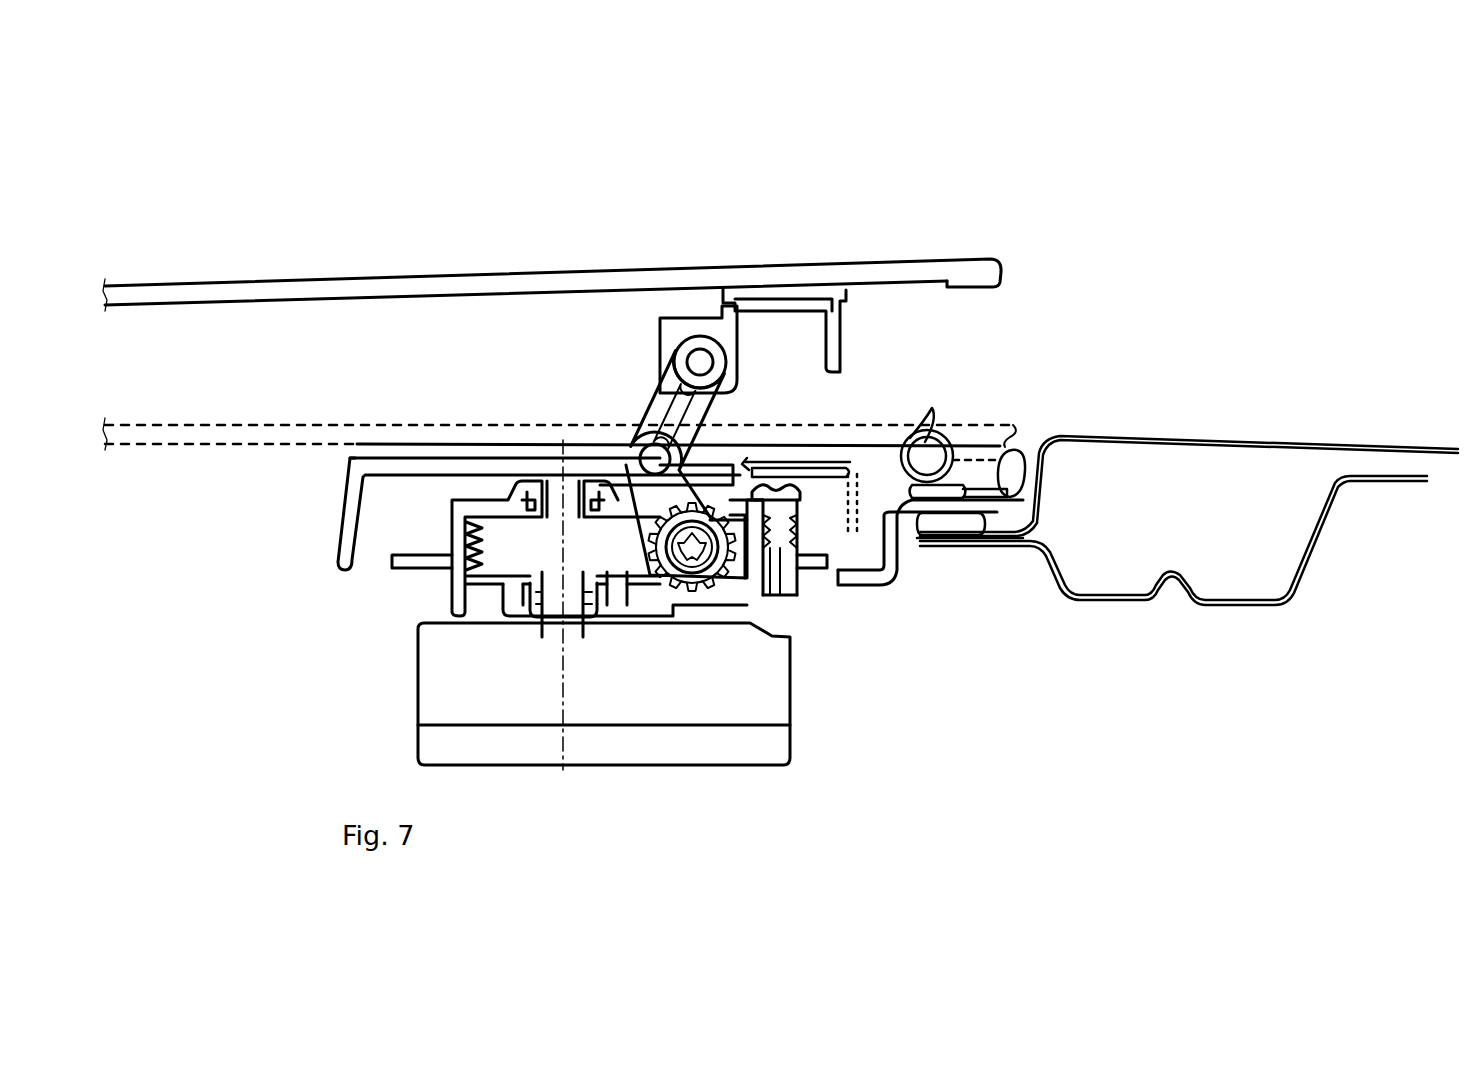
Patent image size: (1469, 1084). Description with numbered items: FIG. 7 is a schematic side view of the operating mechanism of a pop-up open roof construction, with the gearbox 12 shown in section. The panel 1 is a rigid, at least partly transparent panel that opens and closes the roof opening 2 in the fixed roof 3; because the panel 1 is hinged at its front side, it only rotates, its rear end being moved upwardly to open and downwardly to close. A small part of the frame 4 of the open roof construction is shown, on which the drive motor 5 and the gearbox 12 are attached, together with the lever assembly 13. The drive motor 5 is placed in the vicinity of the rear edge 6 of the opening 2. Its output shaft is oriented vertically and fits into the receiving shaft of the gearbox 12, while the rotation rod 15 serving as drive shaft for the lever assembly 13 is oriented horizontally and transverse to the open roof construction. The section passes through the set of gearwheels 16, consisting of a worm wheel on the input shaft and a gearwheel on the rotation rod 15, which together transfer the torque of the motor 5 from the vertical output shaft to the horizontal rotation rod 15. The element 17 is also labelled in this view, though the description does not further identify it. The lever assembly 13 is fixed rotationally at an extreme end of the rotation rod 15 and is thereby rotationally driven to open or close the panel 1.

The panel 1 is at (848, 262).
The roof opening 2 is at (855, 405).
The fixed roof 3 is at (1232, 440).
The frame 4 is at (350, 505).
The drive motor 5 is at (465, 673).
The rear edge 6 is at (965, 410).
The gearbox 12 is at (750, 583).
The lever assembly 13 is at (660, 405).
The rotation rod 15 is at (702, 593).
The set of gearwheels 16 is at (595, 548).
The clamp holder 17 is at (430, 560).